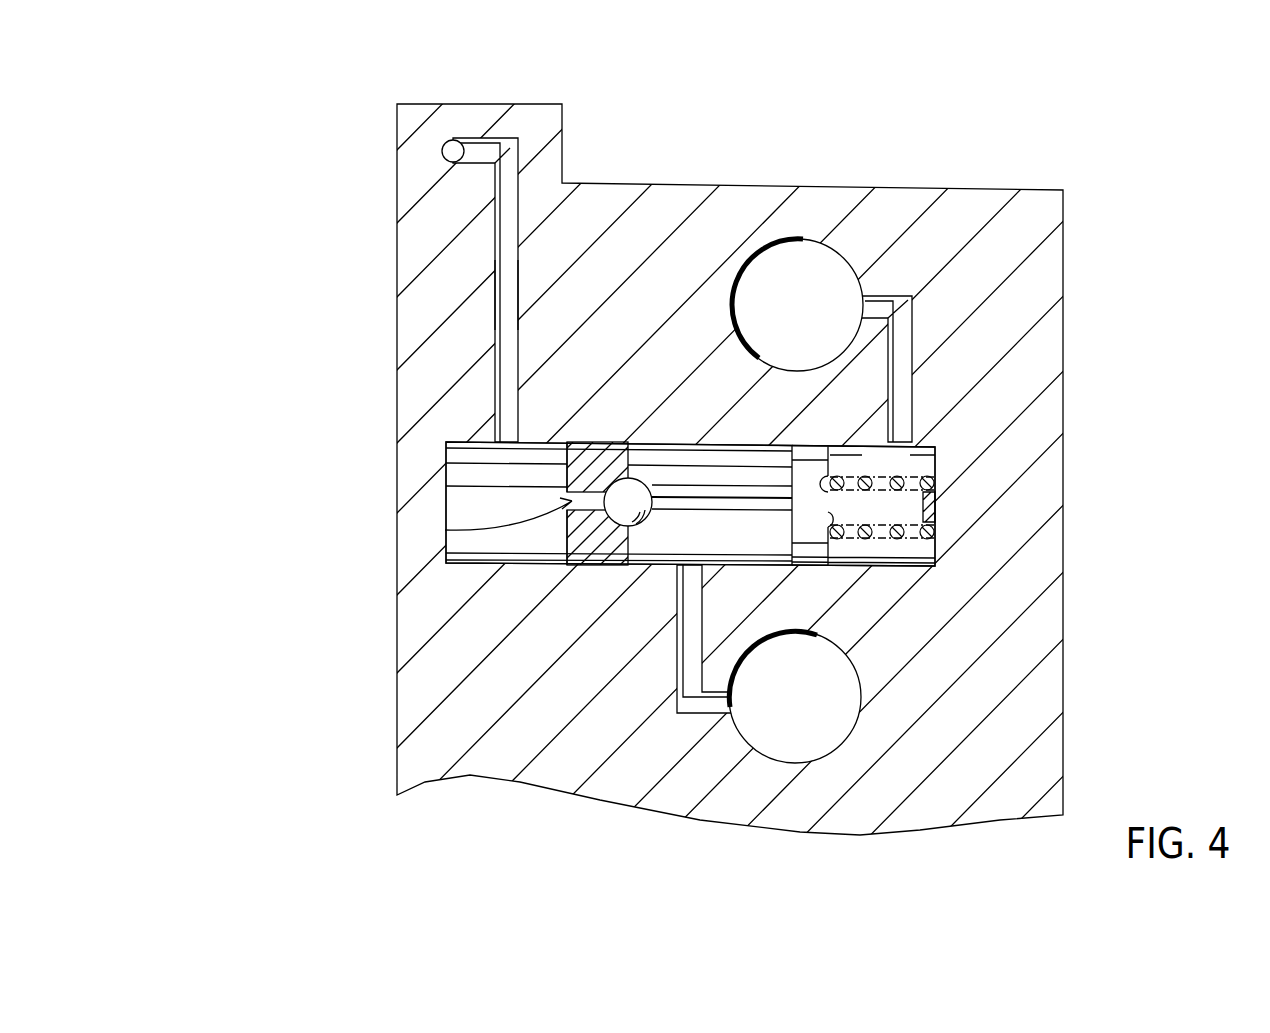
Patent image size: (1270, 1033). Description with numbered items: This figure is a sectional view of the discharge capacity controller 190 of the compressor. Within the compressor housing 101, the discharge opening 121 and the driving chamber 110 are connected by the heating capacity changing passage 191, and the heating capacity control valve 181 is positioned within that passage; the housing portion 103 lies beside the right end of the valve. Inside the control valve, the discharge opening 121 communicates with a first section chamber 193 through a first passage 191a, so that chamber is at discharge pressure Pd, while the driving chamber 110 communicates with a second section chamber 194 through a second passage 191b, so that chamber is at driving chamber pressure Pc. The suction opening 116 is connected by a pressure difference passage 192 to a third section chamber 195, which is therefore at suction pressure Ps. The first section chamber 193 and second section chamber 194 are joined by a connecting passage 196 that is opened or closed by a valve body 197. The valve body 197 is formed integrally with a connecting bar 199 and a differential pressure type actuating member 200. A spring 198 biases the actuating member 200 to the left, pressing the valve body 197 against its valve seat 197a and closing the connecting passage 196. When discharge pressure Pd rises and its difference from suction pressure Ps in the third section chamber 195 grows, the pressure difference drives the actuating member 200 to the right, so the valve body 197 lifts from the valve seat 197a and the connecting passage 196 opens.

The compressor housing 101 is at (1095, 203).
The driving chamber 110 is at (452, 140).
The heating capacity changing passage 191 is at (505, 220).
The first passage 191a is at (683, 648).
The second passage 191b is at (500, 290).
The pressure difference passage 192 is at (905, 330).
The suction opening 116 is at (797, 265).
The discharge opening 121 is at (770, 730).
The control valve 190 is at (947, 377).
The heating capacity control valve 181 is at (962, 430).
The second section chamber 194 is at (492, 544).
The valve body 197 is at (618, 455).
The valve seat 197a is at (598, 440).
The first section chamber 193 is at (605, 543).
The connecting passage 196 is at (622, 518).
The connecting bar 199 is at (693, 495).
The differential pressure type actuating member 200 is at (810, 473).
The spring 198 is at (865, 535).
The third section chamber 195 is at (908, 553).
The end wall 103 is at (1030, 490).